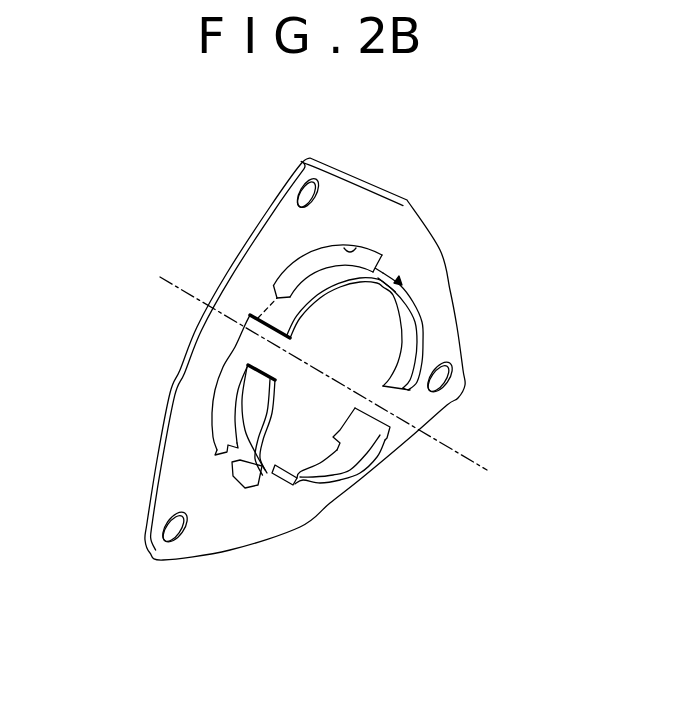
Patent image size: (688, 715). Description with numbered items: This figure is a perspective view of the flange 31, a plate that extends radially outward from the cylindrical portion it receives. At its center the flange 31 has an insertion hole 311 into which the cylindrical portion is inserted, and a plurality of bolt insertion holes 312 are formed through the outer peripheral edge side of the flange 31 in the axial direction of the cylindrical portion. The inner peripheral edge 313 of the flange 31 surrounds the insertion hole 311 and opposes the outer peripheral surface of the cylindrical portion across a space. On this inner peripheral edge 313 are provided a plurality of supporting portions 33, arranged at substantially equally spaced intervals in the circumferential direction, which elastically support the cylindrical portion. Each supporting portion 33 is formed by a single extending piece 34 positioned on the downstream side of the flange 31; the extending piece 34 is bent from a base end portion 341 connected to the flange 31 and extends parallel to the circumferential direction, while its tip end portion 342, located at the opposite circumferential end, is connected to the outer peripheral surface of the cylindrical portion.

The flange 31 is at (395, 198).
The insertion hole 311 is at (334, 363).
The bolt insertion holes 312 is at (163, 531).
The inner peripheral edge 313 is at (352, 248).
The supporting portions 33 is at (440, 298).
The extending piece 34 is at (423, 322).
The base end portion 341 is at (400, 280).
The tip end portion 342 is at (410, 393).